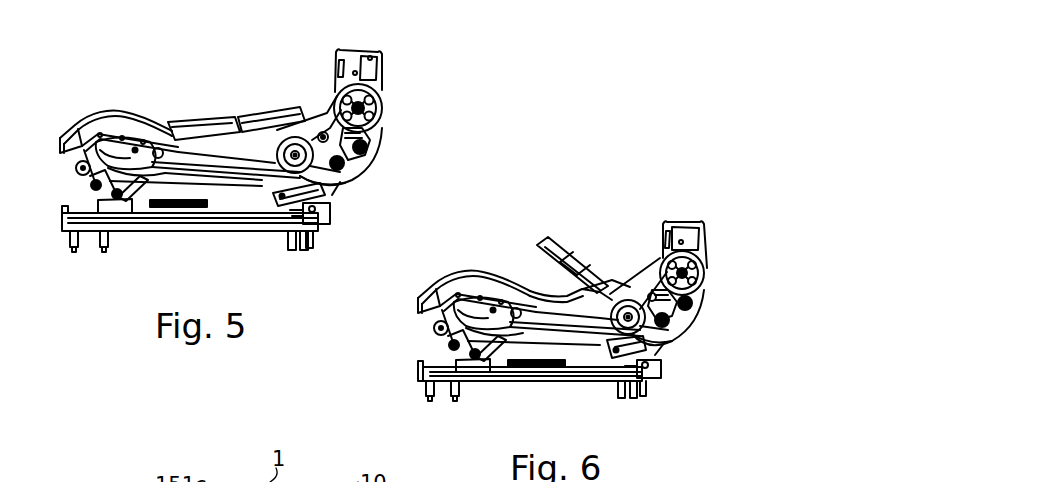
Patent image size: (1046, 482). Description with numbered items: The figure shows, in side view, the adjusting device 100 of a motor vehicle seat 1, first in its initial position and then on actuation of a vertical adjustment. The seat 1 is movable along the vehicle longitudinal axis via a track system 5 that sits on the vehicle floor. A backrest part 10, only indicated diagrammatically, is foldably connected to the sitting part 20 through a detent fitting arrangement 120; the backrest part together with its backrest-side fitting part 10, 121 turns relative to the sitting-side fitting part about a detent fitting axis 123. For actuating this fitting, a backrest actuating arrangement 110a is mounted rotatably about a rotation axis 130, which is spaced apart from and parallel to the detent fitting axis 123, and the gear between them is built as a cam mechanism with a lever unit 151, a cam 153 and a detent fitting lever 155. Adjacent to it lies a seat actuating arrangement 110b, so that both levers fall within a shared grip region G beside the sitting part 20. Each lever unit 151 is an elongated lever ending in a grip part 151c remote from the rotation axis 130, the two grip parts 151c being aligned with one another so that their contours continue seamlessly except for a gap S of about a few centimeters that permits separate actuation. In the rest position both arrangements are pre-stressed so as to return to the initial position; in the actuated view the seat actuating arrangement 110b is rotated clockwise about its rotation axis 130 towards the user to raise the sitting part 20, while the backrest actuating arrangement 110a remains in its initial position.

In FIG. 5, the motor vehicle seat 1 is at (268, 48).
In FIG. 5, the track system 5 is at (66, 236).
In FIG. 6, the track system 5 is at (418, 380).
In FIG. 5, the backrest part 10 is at (392, 58).
In FIG. 6, the seat back frame / side member 10, 121 is at (712, 228).
In FIG. 5, the sitting part 20 is at (77, 115).
In FIG. 6, the sitting part 20 is at (440, 290).
In FIG. 6, the adjusting device 100 is at (626, 238).
In FIG. 5, the backrest actuating arrangement 110a is at (285, 215).
In FIG. 6, the backrest actuating arrangement 110a is at (593, 345).
In FIG. 5, the seat actuating arrangement 110b is at (165, 178).
In FIG. 6, the seat actuating arrangement 110b is at (530, 226).
In FIG. 5, the detent fitting arrangement 120 is at (388, 89).
In FIG. 6, the detent fitting arrangement 120 is at (710, 276).
In FIG. 5, the detent fitting axis 123 is at (384, 112).
In FIG. 6, the detent fitting axis 123 is at (700, 296).
In FIG. 5, the rotation axis 130 is at (315, 108).
In FIG. 6, the rotation axis 130 is at (650, 364).
In FIG. 5, the lever unit 151 is at (330, 190).
In FIG. 6, the lever unit 151 is at (612, 284).
In FIG. 5, the grip part 151c is at (178, 116).
In FIG. 5, the cam 153 is at (362, 168).
In FIG. 6, the cam 153 is at (665, 340).
In FIG. 5, the detent fitting lever 155 is at (372, 132).
In FIG. 6, the detent fitting lever 155 is at (688, 318).
In FIG. 5, the grip region G is at (226, 106).
In FIG. 5, the gap S is at (240, 182).
In FIG. 6, the gap S is at (554, 333).